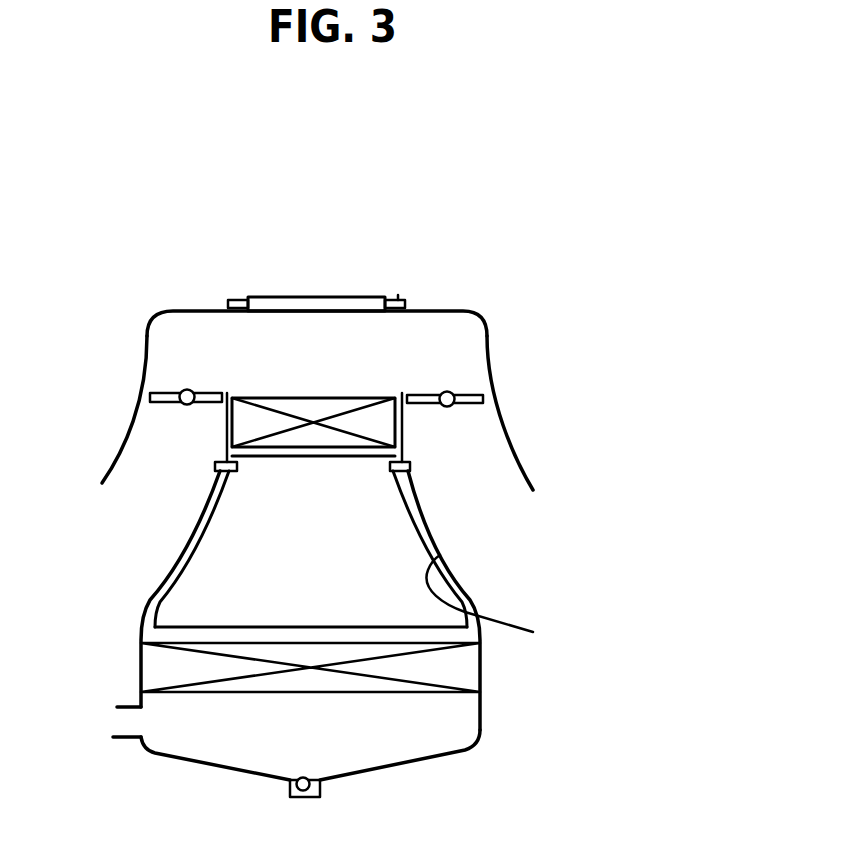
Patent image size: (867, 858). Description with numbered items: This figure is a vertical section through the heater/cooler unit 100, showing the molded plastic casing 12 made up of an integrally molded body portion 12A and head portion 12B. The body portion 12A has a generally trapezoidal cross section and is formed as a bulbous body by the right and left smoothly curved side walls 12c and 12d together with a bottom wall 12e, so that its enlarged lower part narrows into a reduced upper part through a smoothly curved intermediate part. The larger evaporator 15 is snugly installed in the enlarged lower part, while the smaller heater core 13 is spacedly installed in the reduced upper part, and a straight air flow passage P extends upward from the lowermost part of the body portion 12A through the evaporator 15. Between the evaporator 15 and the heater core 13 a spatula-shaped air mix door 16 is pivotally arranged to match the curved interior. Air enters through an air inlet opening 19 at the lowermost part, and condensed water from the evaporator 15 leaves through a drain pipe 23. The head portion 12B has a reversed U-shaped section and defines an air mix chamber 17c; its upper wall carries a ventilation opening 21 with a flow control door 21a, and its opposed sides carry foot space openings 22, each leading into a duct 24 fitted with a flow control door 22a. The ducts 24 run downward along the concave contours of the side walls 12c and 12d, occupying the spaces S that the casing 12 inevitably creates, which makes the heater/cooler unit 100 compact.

The heater/cooler unit 100 is at (512, 150).
The casing 12 is at (646, 511).
The body portion 12A is at (508, 605).
The head portion 12B is at (497, 362).
The right curved side wall 12c is at (178, 553).
The left curved side wall 12d is at (457, 565).
The bottom wall 12e is at (415, 763).
The heater core 13 is at (307, 398).
The evaporator 15 is at (465, 663).
The air mix door 16 is at (327, 563).
The air mix chamber 17c is at (362, 327).
The air inlet opening 19 is at (118, 721).
The ventilation opening 21 is at (233, 296).
The flow control door 21a is at (320, 303).
The foot space opening 22 is at (212, 355).
The flow control door 22a is at (163, 391).
The drain pipe 23 is at (318, 788).
The duct 24 is at (122, 451).
The space S is at (188, 502).
The straight air flow passage P is at (489, 604).